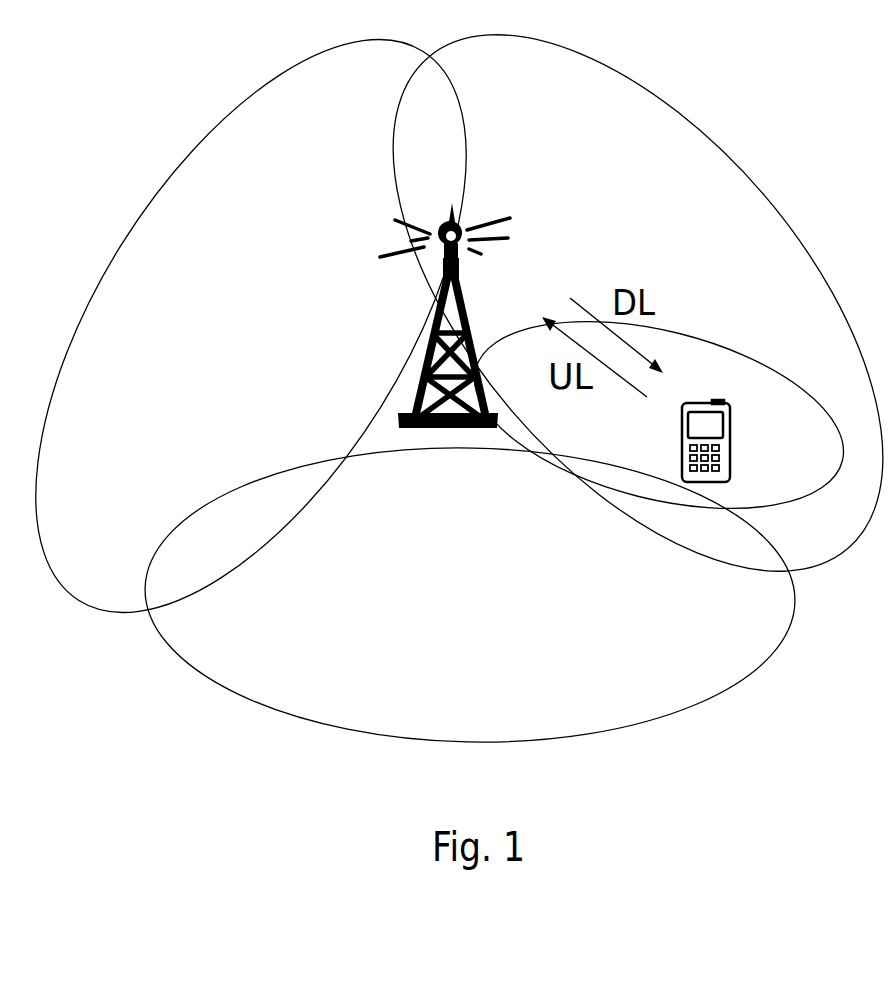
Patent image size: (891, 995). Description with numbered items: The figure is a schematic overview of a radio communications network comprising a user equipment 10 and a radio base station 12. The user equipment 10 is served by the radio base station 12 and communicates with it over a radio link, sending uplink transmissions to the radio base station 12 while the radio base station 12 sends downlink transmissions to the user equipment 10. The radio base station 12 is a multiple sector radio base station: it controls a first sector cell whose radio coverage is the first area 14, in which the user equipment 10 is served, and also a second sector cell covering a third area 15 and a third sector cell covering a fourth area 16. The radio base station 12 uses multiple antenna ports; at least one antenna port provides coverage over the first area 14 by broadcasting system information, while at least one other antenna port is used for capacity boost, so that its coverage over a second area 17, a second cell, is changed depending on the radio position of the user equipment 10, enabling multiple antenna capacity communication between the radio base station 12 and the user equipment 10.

The user equipment 10 is at (718, 422).
The radio base station 12 is at (466, 325).
The first area 14 is at (651, 246).
The third area 15 is at (273, 224).
The fourth area 16 is at (474, 593).
The second area 17 is at (628, 452).